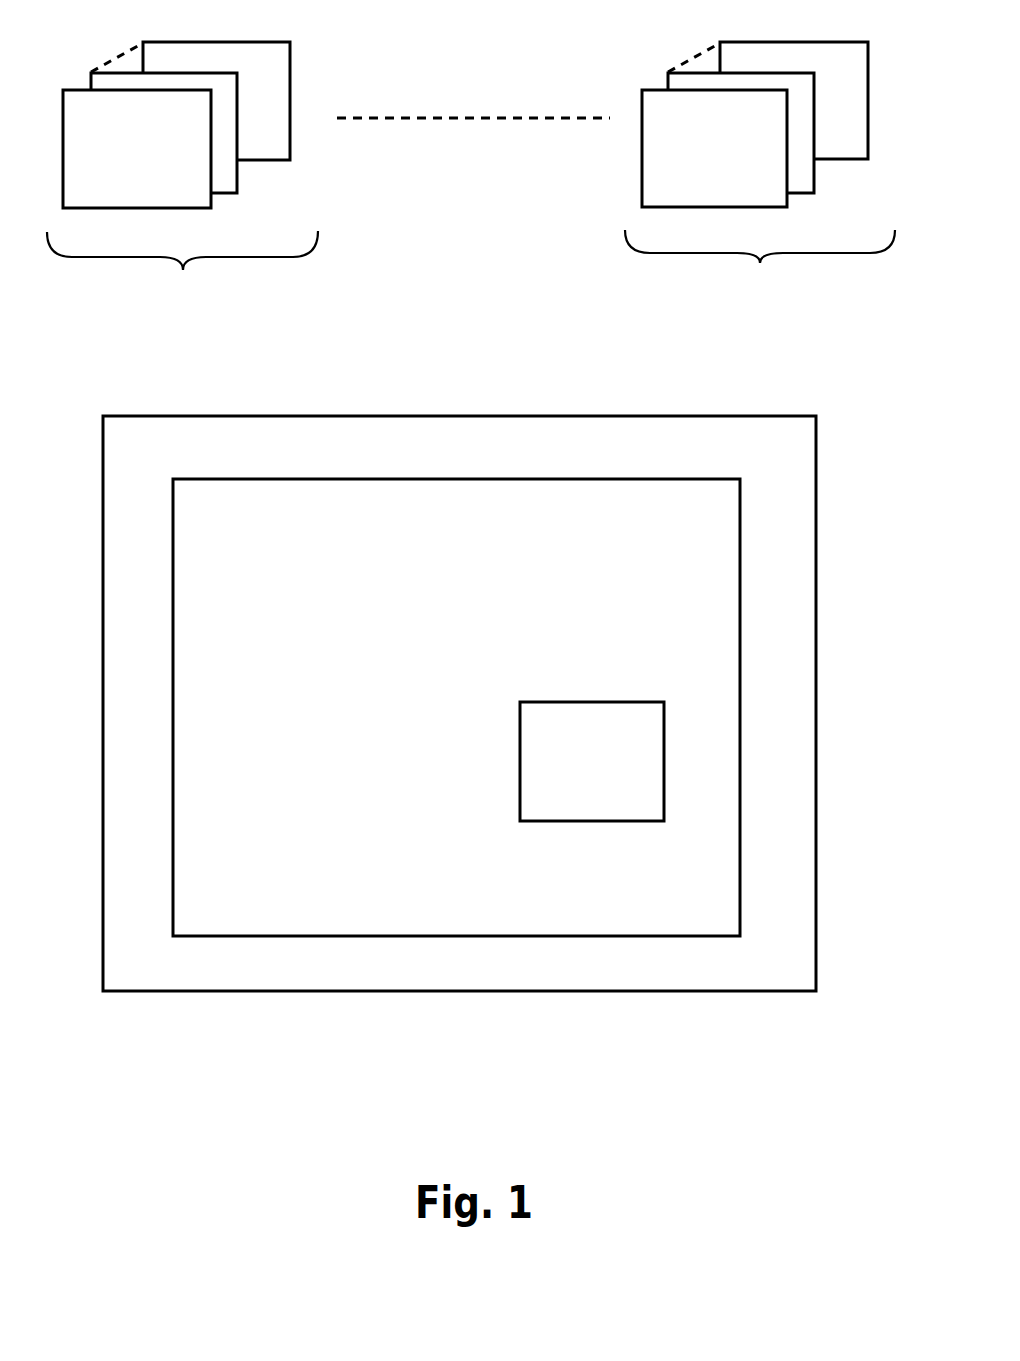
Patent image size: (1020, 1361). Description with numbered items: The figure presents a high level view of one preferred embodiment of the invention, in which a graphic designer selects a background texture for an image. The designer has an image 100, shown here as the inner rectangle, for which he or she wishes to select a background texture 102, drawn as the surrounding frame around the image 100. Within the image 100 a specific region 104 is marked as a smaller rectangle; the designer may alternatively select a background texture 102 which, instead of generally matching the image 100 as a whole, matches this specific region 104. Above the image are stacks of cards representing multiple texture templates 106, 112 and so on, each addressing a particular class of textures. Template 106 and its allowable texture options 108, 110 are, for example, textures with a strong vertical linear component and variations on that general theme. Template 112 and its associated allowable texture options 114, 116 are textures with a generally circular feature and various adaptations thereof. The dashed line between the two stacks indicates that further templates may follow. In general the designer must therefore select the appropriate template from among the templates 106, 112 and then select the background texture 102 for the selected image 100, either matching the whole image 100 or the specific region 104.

The image 100 is at (417, 937).
The background texture 102 is at (679, 967).
The specific region 104 is at (646, 753).
The texture template 106 is at (188, 178).
The allowable texture option 108 is at (192, 210).
The allowable texture option 110 is at (238, 177).
The texture template 112 is at (764, 177).
The allowable texture option 114 is at (765, 210).
The allowable texture option 116 is at (815, 177).